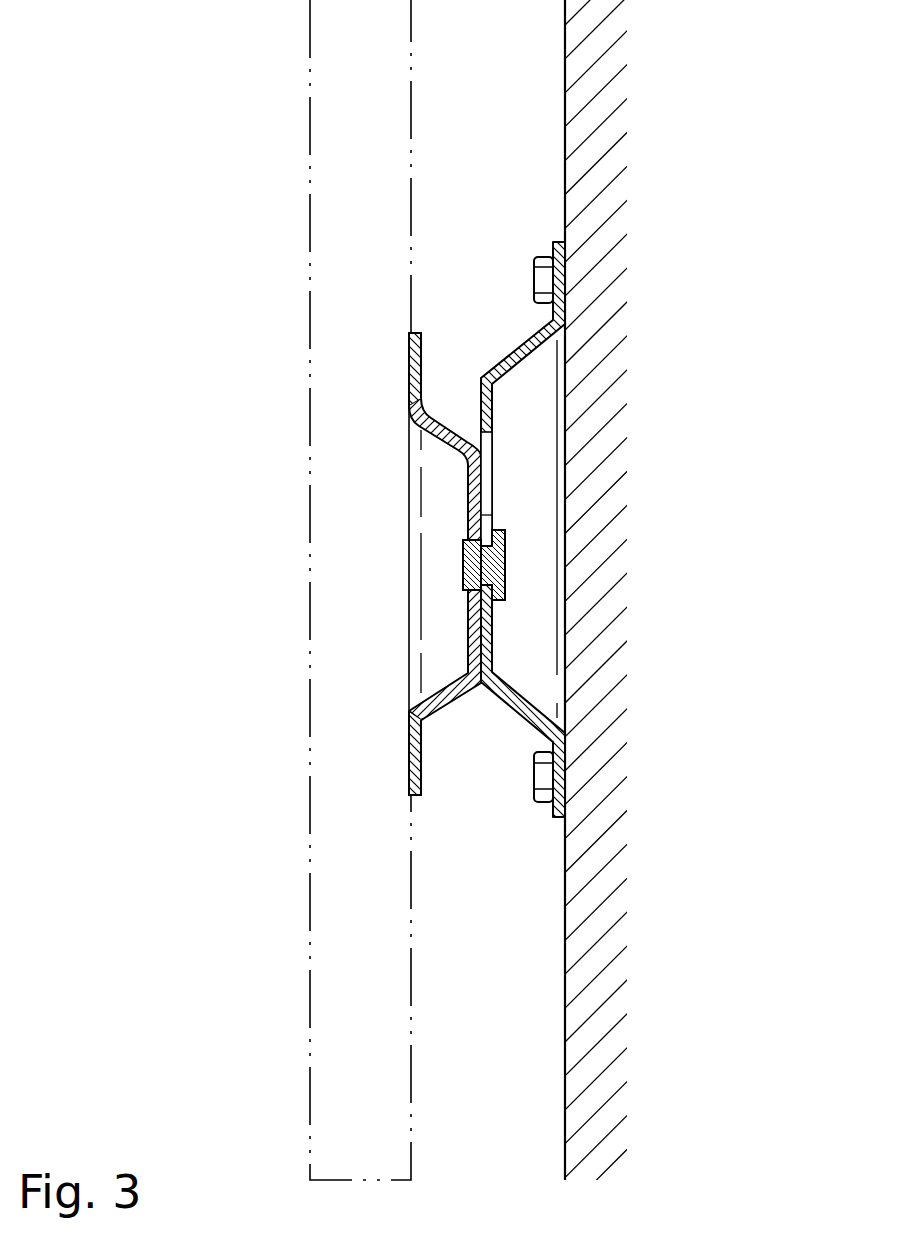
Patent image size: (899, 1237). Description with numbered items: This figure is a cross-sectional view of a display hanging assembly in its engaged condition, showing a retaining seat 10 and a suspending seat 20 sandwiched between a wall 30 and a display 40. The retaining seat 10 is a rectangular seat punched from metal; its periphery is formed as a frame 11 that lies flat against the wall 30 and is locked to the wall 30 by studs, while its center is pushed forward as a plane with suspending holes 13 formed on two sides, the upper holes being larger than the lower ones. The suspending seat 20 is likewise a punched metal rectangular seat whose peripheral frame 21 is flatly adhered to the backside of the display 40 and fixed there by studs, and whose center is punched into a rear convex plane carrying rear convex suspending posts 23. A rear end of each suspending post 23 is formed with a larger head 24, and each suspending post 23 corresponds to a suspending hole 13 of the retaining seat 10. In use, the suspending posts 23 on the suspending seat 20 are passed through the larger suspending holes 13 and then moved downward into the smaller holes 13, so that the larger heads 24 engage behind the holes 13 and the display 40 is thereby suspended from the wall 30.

The retaining seat 10 is at (508, 344).
The frame 11 is at (553, 246).
The suspending holes 13 is at (487, 472).
The suspending seat 20 is at (453, 714).
The frame 21 is at (409, 365).
The suspending post 23 is at (465, 563).
The larger head 24 is at (505, 567).
The wall 30 is at (575, 72).
The display 40 is at (308, 520).